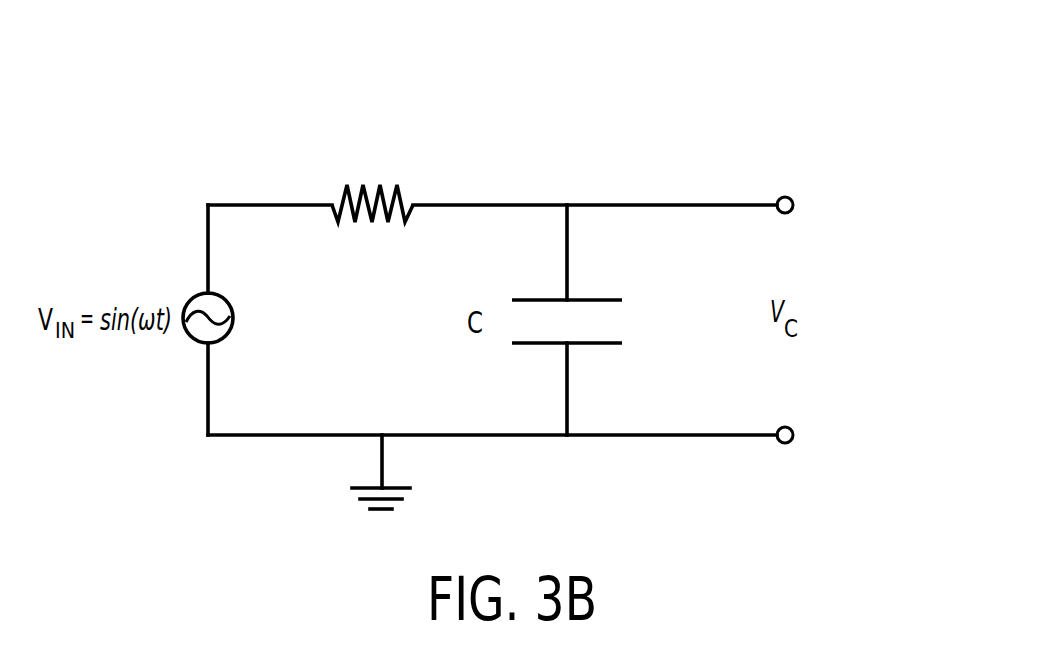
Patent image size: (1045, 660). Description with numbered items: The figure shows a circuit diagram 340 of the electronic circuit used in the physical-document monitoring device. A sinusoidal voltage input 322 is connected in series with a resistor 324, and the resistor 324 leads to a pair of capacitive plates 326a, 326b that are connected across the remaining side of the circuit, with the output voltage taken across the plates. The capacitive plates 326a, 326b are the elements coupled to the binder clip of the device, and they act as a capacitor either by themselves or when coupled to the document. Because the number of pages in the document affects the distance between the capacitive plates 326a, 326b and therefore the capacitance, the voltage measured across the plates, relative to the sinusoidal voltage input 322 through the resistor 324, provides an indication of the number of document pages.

The circuit diagram 340 is at (860, 103).
The sinusoidal voltage input 322 is at (233, 318).
The resistor 324 is at (399, 198).
The capacitive plate 326a is at (600, 345).
The capacitive plate 326b is at (598, 299).